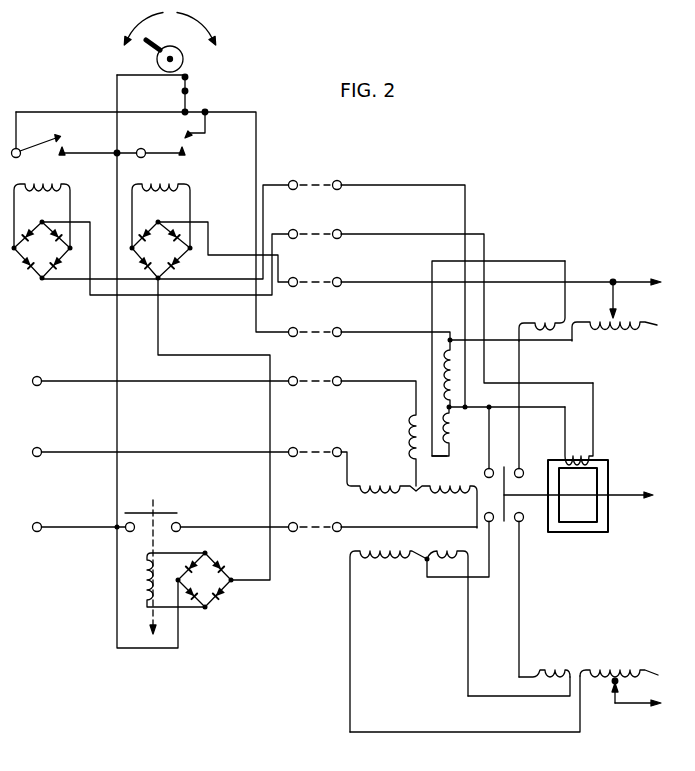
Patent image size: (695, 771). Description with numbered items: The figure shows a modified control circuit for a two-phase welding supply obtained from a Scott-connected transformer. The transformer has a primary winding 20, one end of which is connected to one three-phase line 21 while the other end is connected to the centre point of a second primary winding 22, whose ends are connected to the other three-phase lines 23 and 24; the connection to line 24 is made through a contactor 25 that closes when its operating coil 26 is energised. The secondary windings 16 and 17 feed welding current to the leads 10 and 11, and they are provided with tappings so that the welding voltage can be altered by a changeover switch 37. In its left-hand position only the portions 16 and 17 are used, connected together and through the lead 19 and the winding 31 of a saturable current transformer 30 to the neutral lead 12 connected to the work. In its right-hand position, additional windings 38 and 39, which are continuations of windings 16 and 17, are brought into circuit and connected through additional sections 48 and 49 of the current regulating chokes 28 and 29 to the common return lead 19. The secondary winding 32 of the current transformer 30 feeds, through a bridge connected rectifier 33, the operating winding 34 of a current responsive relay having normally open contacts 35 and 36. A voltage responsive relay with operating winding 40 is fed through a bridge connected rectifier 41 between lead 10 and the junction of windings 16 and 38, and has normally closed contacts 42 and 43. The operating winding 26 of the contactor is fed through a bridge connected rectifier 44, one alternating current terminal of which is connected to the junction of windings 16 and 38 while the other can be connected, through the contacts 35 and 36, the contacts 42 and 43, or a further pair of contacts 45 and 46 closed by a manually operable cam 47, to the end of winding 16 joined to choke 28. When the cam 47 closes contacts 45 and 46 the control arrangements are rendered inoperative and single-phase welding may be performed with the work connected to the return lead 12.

The lead 10 is at (631, 287).
The lead 11 is at (633, 710).
The neutral lead 12 is at (620, 497).
The secondary winding 16 is at (441, 362).
The secondary winding 17 is at (389, 566).
The lead 19 is at (533, 497).
The primary winding 20 is at (409, 433).
The three-phase line 21 is at (70, 451).
The second primary winding 22 is at (373, 478).
The three-phase line 23 is at (70, 378).
The three-phase line 24 is at (66, 529).
The contactor 25 is at (168, 511).
The operating coil 26 is at (176, 580).
The current regulating choke 28 is at (603, 335).
The current regulating choke 29 is at (619, 666).
The saturable current transformer 30 is at (556, 533).
The primary winding 31 is at (577, 497).
The secondary winding 32 is at (595, 452).
The rectifier 33 is at (50, 282).
The operating winding 34 is at (48, 193).
The contact 35 is at (38, 142).
The contact 36 is at (64, 155).
The changeover switch 37 is at (497, 493).
The additional winding 38 is at (453, 433).
The additional winding 39 is at (448, 568).
The operating winding 40 is at (165, 193).
The rectifier 41 is at (147, 250).
The contact 42 is at (185, 158).
The contact 43 is at (197, 139).
The bridge connected rectifier 44 is at (205, 592).
The contact 45 is at (187, 76).
The contact 46 is at (188, 91).
The manually operable cam 47 is at (170, 46).
The additional section 48 is at (541, 318).
The additional section 49 is at (550, 666).